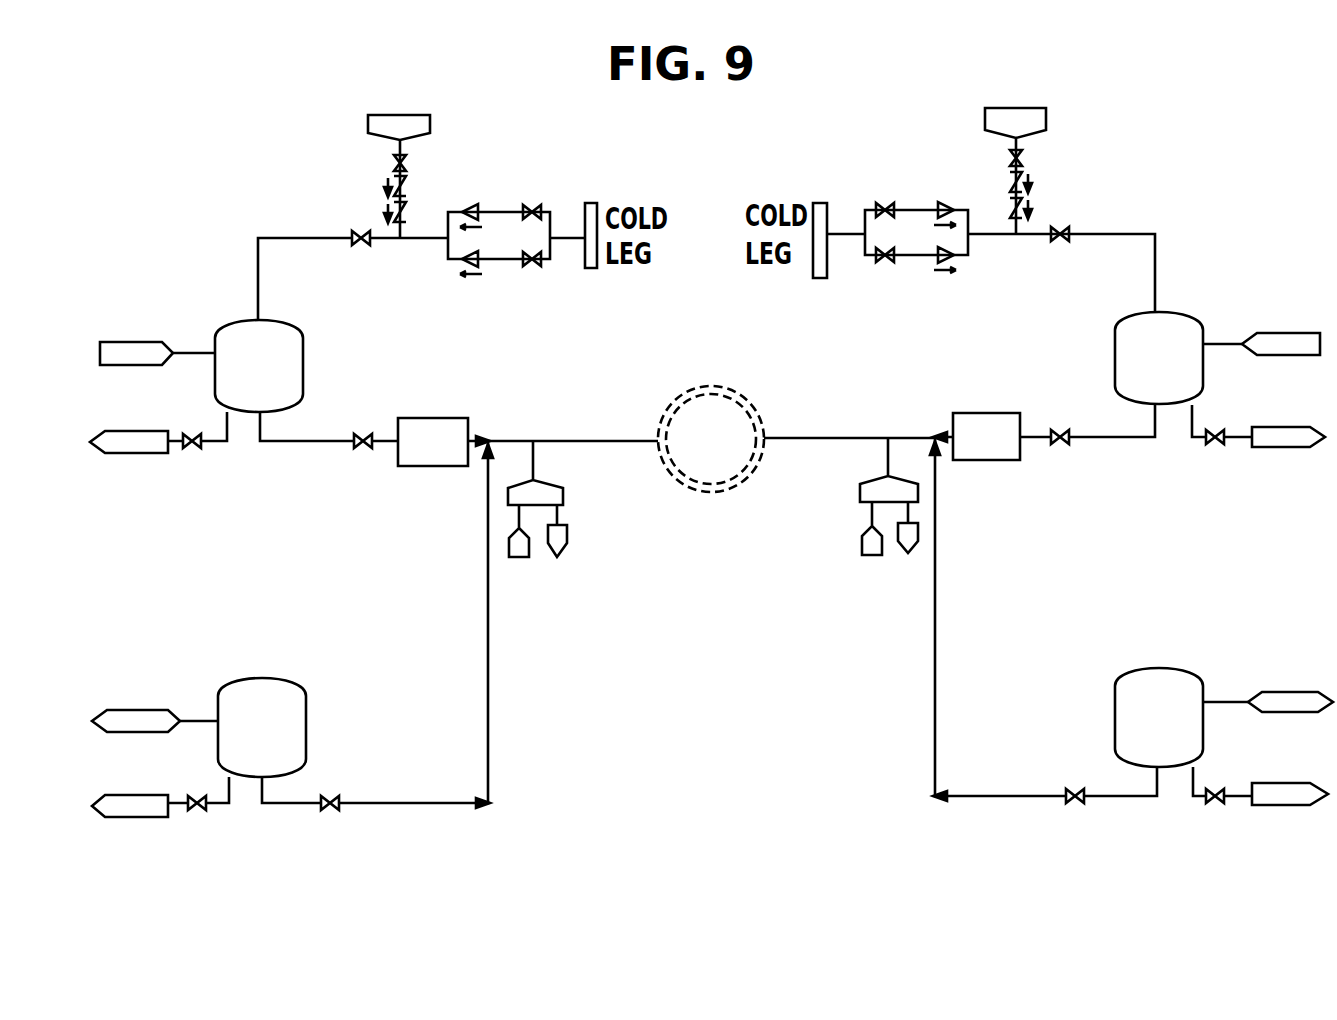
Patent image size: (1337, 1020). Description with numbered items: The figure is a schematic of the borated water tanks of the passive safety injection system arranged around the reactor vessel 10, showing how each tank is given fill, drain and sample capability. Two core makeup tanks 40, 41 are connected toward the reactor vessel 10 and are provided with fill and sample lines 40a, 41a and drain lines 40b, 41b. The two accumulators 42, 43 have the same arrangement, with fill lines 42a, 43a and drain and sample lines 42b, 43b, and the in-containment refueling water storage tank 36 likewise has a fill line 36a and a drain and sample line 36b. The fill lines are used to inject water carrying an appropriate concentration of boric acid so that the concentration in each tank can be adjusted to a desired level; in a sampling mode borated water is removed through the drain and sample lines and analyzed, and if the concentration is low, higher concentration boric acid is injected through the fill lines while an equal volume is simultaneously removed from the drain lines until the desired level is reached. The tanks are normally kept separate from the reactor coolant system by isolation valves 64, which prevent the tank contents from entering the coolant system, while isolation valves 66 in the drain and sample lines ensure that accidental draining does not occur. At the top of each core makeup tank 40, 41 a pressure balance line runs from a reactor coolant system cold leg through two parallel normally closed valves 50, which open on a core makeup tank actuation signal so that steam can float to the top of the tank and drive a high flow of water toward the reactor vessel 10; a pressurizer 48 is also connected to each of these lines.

The reactor vessel 10 is at (708, 492).
The in-containment refueling water storage tank 36 is at (563, 492).
The fill line 36a is at (519, 558).
The drain and sample line 36b is at (567, 553).
The core makeup tank 40 is at (303, 353).
The fill and sample line 40a is at (140, 340).
The drain line 40b is at (130, 455).
The core makeup tank 41 is at (1115, 346).
The fill and sample line 41a is at (1280, 333).
The drain line 41b is at (1292, 449).
The accumulator 42 is at (307, 703).
The fill line 42a is at (125, 710).
The drain and sample line 42b is at (118, 818).
The accumulator 43 is at (1115, 710).
The fill line 43a is at (1312, 692).
The drain and sample line 43b is at (1295, 805).
The pressurizer 48 is at (368, 122).
The normally closed valve 50 is at (535, 208).
The isolation valve 64 is at (352, 235).
The isolation valve 66 is at (198, 446).